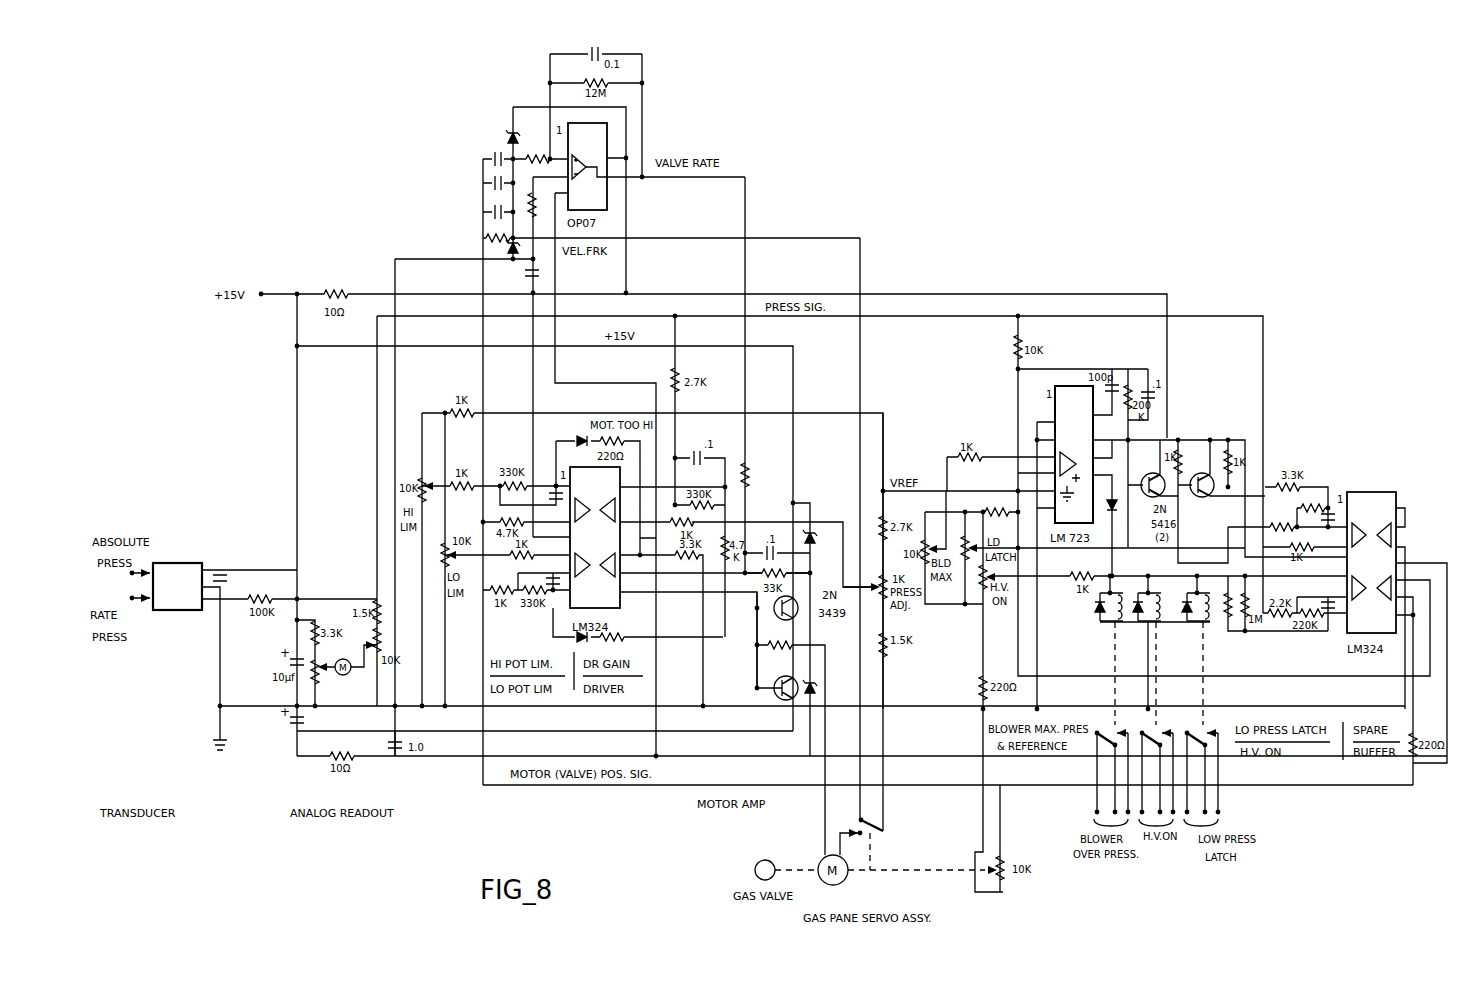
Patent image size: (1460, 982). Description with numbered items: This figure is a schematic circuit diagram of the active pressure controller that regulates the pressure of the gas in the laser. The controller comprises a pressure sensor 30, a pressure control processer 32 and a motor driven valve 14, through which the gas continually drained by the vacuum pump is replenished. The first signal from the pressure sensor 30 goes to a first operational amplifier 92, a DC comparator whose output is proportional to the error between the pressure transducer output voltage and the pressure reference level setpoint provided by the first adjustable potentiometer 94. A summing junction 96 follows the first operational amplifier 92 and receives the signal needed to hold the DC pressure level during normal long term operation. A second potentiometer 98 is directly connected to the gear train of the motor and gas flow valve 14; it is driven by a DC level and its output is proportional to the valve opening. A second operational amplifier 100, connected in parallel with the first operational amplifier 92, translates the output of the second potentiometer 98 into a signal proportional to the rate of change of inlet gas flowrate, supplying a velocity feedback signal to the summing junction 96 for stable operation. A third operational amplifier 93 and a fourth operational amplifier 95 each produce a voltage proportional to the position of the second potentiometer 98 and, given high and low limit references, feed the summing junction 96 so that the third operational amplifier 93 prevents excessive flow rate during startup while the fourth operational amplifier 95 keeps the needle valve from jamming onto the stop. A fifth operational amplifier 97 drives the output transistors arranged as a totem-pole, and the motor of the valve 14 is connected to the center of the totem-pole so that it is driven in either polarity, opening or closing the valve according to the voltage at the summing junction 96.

The second operational amplifier 100 is at (601, 131).
The pressure control processer 32 is at (240, 410).
The pressure sensor 30 is at (180, 603).
The third operational amplifier 93 is at (590, 497).
The first operational amplifier 92 is at (612, 500).
The fourth operational amplifier 95 is at (585, 572).
The fifth operational amplifier 97 is at (605, 578).
The summing junction 96 is at (745, 575).
The first adjustable potentiometer 94 is at (905, 569).
The motor driven valve 14 is at (774, 856).
The second potentiometer 98 is at (1002, 892).